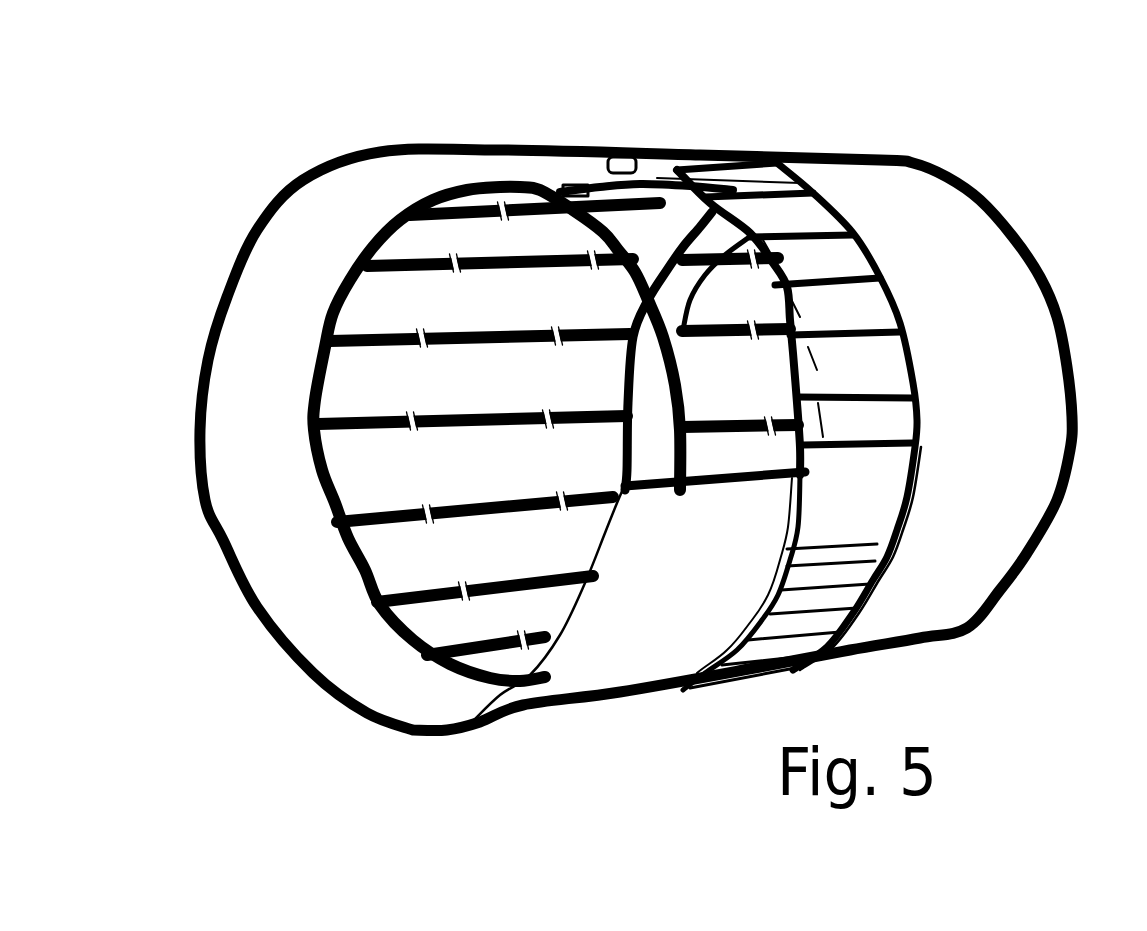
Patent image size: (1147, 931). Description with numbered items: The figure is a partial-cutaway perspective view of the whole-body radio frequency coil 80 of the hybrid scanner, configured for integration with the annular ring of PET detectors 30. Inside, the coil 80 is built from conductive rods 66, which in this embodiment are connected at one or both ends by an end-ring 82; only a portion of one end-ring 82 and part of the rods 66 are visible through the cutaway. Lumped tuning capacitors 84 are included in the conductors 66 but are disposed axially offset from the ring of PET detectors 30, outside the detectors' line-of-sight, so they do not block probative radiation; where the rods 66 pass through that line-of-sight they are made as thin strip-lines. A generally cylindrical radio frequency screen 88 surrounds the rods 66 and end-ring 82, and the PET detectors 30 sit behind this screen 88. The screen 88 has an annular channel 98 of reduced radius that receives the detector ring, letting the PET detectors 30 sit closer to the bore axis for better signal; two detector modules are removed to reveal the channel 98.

The whole-body radio frequency coil 80 is at (1023, 110).
The end-ring 82 is at (340, 293).
The lumped tuning capacitors 84 is at (423, 420).
The conductive rods 66 is at (490, 502).
The PET detectors 30 is at (790, 213).
The annular channel 98 is at (858, 500).
The radio frequency screen 88 is at (930, 598).